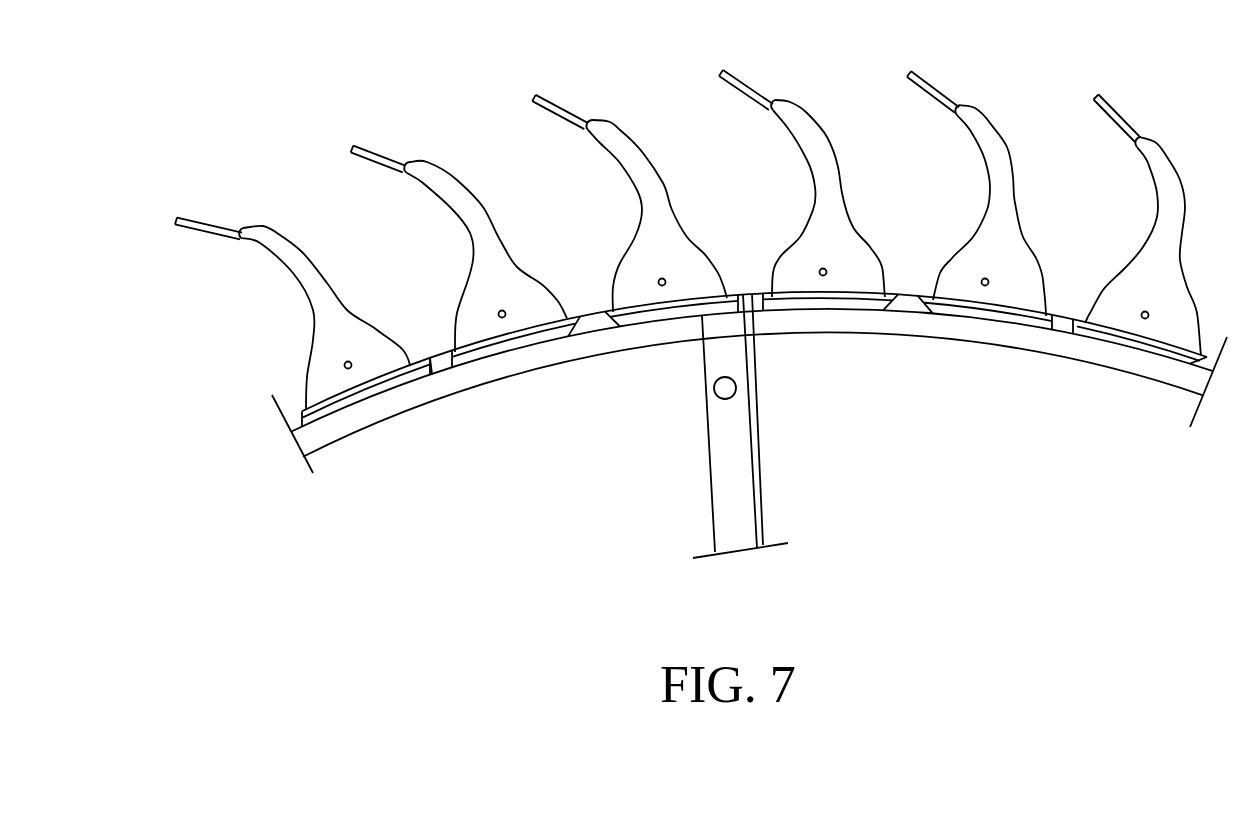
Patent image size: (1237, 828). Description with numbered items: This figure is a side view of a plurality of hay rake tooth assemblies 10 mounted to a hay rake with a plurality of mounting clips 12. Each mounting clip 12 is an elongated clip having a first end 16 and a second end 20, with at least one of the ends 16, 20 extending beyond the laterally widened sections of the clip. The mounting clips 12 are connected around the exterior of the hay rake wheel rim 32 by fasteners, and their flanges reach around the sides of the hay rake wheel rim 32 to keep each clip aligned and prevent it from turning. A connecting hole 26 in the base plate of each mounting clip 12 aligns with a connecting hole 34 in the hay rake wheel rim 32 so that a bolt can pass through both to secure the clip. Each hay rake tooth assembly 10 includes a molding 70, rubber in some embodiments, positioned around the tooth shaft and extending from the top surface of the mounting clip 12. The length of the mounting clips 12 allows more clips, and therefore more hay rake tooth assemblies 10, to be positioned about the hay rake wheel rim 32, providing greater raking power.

The hay rake tooth assembly 10 is at (632, 84).
The mounting clip 12 is at (468, 396).
The first end 16 is at (286, 428).
The second end 20 is at (582, 330).
The connecting hole 26 is at (1063, 313).
The hay rake wheel rim 32 is at (905, 334).
The connecting hole 34 is at (1060, 336).
The molding 70 is at (318, 355).